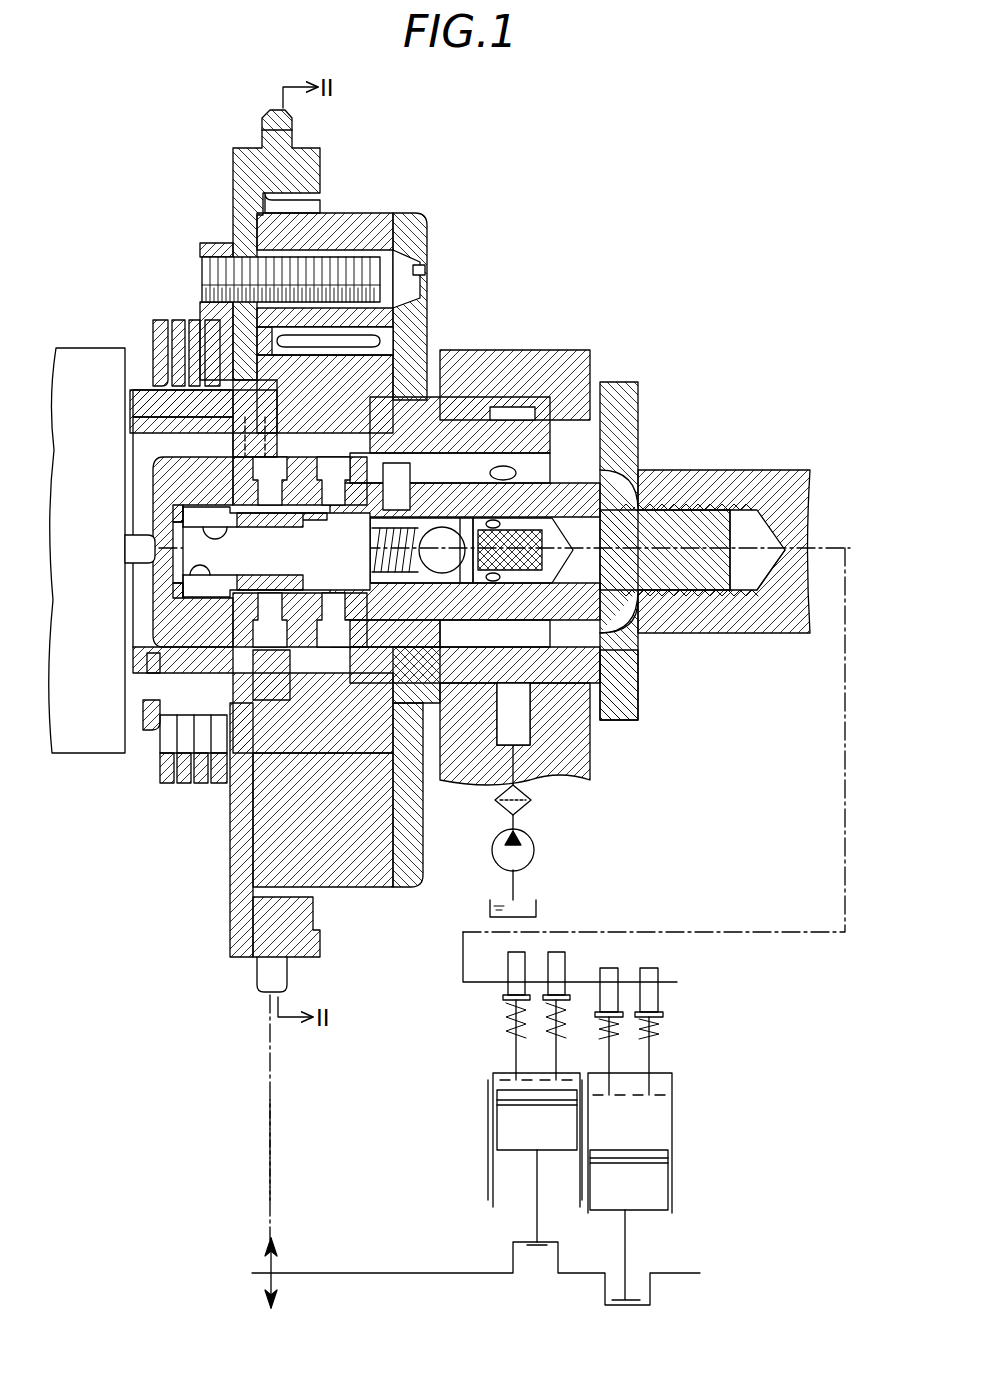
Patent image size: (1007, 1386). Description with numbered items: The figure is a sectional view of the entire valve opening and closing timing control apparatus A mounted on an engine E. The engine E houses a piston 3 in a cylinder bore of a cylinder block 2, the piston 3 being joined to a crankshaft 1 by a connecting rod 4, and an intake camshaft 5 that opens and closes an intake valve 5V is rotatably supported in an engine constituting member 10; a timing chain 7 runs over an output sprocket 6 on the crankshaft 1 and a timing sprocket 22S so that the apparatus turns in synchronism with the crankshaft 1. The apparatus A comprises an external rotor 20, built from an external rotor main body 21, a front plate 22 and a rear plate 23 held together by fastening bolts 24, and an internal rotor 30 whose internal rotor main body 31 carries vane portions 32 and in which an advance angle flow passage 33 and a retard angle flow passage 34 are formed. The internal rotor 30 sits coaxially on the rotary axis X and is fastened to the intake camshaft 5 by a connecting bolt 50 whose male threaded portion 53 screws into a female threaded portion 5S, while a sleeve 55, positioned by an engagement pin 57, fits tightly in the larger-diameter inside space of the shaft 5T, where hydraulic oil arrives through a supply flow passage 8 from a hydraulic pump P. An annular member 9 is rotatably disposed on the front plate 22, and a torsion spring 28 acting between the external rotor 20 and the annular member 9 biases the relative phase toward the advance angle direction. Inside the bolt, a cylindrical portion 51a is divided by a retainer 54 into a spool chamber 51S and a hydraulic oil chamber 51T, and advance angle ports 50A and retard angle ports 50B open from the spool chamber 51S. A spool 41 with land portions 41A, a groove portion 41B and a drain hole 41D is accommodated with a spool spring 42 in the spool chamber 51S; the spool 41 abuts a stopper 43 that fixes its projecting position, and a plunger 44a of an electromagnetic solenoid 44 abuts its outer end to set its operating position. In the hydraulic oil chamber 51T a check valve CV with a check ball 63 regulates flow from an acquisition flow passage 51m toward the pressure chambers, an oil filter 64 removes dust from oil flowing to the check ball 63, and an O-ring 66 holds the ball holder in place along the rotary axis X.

The crankshaft 1 is at (395, 1273).
The cylinder block 2 is at (672, 1105).
The piston 3 is at (520, 1150).
The connecting rod 4 is at (540, 1215).
The intake camshaft 5 is at (705, 470).
The intake valve 5V is at (560, 1083).
The female threaded portion 5S is at (770, 600).
The shaft 5T is at (630, 630).
The output sprocket 6 is at (268, 1283).
The timing chain 7 is at (272, 1135).
The supply flow passage 8 is at (540, 470).
The annular member 9 is at (140, 705).
The engine constituting member 10 is at (590, 760).
The external rotor 20 is at (212, 238).
The external rotor main body 21 is at (368, 213).
The front plate 22 is at (233, 180).
The timing sprocket 22S is at (258, 985).
The rear plate 23 is at (420, 212).
The fastening bolts 24 is at (385, 270).
The torsion spring 28 is at (158, 780).
The internal rotor 30 is at (400, 330).
The internal rotor main body 31 is at (325, 394).
The vane portions 32 is at (250, 840).
The advance angle flow passage 33 is at (215, 437).
The retard angle flow passage 34 is at (460, 425).
The spool 41 is at (165, 520).
The land portions 41A is at (260, 510).
The groove portion 41B is at (265, 720).
The drain hole 41D is at (175, 560).
The spool spring 42 is at (305, 535).
The stopper 43 is at (190, 590).
The electromagnetic solenoid 44 is at (105, 350).
The plunger 44a is at (140, 535).
The connecting bolt 50 is at (153, 462).
The advance angle ports 50A is at (285, 650).
The retard angle ports 50B is at (310, 445).
The cylindrical portion 51a is at (515, 734).
The acquisition flow passage 51m is at (555, 483).
The spool chamber 51S is at (179, 668).
The hydraulic oil chamber 51T is at (630, 593).
The male threaded portion 53 is at (735, 510).
The retainer 54 is at (489, 470).
The sleeve 55 is at (440, 590).
The engagement pin 57 is at (410, 470).
The check ball 63 is at (520, 570).
The oil filter 64 is at (540, 610).
The O-ring 66 is at (385, 590).
The valve opening and closing timing control apparatus A is at (412, 172).
The engine E is at (735, 205).
The check valve CV is at (510, 600).
The hydraulic pump P is at (535, 850).
The rotary axis X is at (99, 548).